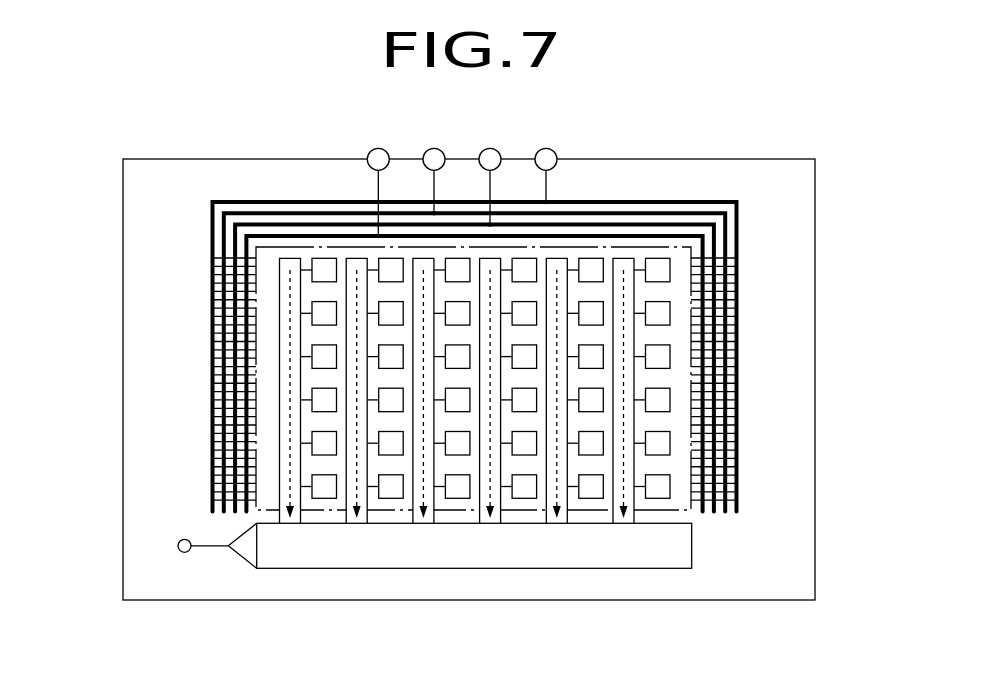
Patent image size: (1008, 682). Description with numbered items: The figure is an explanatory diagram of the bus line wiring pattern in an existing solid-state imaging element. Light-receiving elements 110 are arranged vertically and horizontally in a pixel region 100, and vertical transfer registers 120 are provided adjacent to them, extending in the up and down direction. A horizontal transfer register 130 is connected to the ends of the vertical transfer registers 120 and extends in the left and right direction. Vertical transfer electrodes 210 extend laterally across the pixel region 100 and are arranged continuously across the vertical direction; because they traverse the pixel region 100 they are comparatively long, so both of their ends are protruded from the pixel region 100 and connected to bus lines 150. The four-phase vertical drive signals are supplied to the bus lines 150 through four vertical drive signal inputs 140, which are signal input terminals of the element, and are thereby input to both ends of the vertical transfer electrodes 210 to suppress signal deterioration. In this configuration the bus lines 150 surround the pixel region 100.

The pixel region 100 is at (663, 513).
The light-receiving elements 110 is at (592, 491).
The vertical transfer registers 120 is at (497, 494).
The horizontal transfer register 130 is at (368, 553).
The vertical drive signal inputs 140 is at (427, 150).
The bus lines 150 is at (246, 237).
The vertical transfer electrodes 210 is at (213, 256).